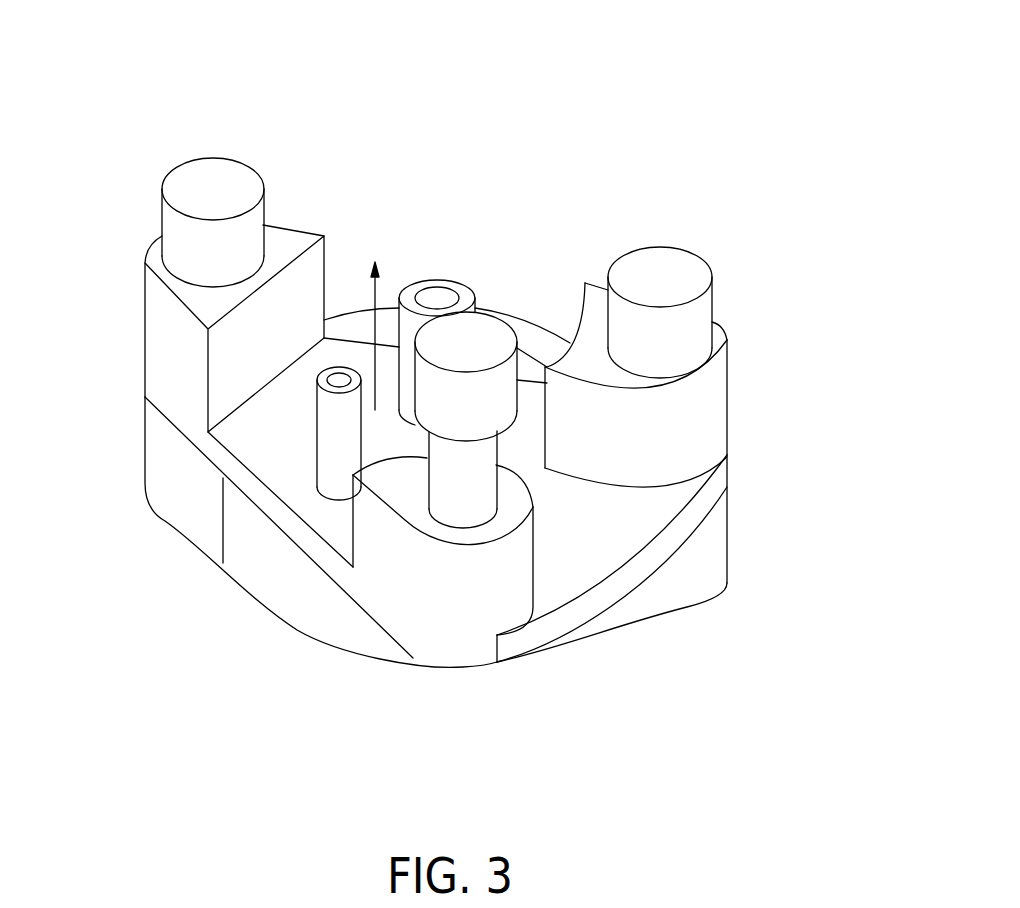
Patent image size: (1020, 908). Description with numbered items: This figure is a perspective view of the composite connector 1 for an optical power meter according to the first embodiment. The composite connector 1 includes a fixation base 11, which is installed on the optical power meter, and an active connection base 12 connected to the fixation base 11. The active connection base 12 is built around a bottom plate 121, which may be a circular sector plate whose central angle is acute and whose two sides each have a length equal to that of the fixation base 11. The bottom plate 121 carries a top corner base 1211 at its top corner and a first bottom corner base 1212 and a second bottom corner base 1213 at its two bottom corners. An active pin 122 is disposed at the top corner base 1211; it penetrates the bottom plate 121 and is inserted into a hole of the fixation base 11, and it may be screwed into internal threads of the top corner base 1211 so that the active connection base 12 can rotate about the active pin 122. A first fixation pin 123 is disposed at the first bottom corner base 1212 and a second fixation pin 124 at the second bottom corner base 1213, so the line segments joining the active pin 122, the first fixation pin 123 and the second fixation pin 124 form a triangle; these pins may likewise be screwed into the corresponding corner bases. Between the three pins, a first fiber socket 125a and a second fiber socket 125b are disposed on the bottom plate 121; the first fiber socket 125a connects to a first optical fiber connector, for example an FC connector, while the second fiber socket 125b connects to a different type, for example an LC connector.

The composite connector 1 is at (727, 37).
The fixation base 11 is at (280, 593).
The active connection base 12 is at (627, 517).
The bottom plate 121 is at (330, 510).
The top corner base 1211 is at (162, 347).
The first bottom corner base 1212 is at (707, 403).
The second bottom corner base 1213 is at (500, 592).
The active pin 122 is at (194, 173).
The first fixation pin 123 is at (660, 279).
The second fixation pin 124 is at (485, 340).
The first fiber socket 125a is at (438, 299).
The second fiber socket 125b is at (330, 441).